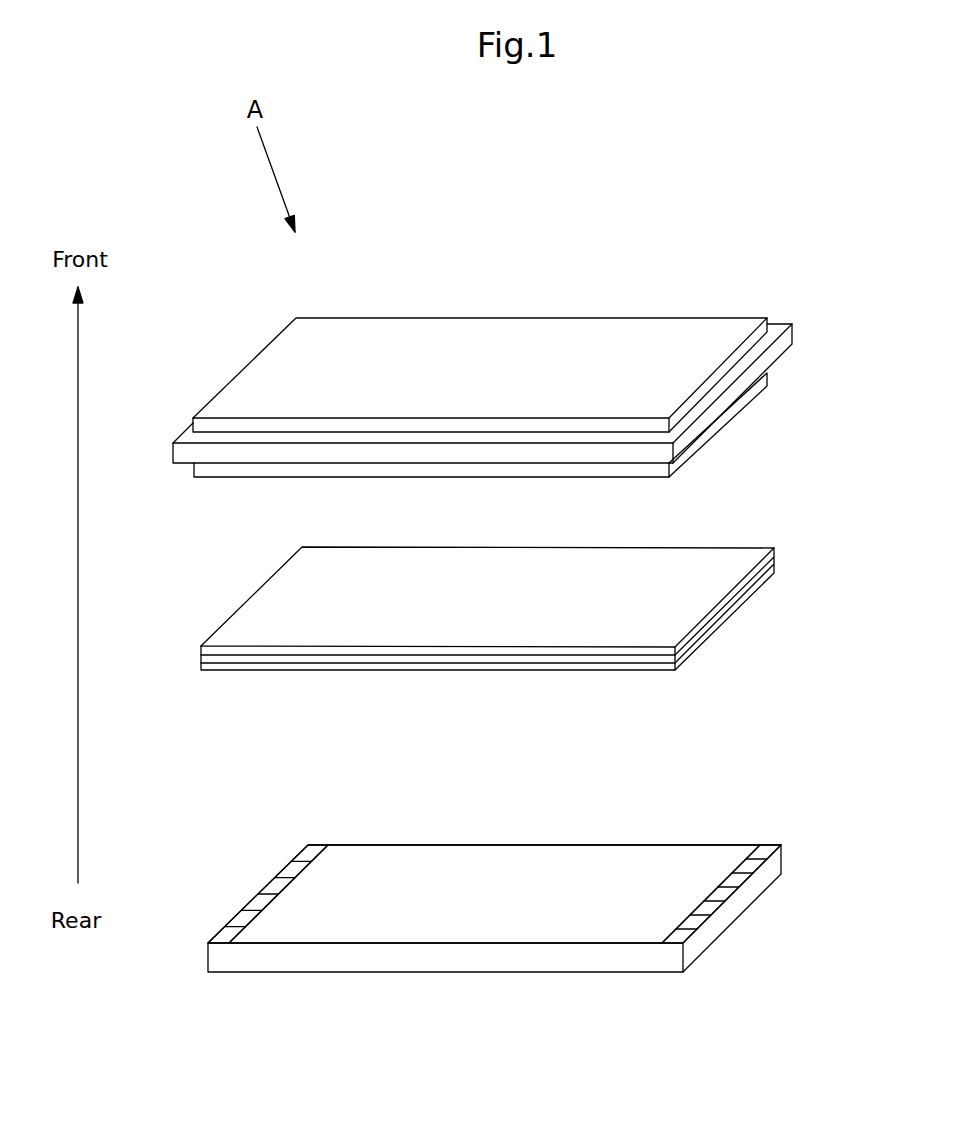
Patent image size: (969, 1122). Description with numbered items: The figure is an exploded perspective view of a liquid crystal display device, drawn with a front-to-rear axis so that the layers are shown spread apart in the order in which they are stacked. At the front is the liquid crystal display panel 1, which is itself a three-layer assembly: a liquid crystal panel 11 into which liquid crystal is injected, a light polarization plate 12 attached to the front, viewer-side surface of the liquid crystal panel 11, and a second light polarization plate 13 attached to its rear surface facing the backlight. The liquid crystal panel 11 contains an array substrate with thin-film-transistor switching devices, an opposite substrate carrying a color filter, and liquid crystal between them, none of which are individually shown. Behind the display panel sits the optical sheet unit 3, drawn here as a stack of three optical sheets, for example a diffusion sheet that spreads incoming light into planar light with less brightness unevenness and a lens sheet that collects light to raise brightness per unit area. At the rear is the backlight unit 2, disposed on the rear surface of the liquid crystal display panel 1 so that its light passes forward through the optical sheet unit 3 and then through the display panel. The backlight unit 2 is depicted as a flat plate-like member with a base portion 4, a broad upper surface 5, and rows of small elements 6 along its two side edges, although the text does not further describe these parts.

The liquid crystal display panel 1 is at (547, 377).
The liquid crystal panel 11 is at (775, 351).
The light polarization plate 12 is at (747, 334).
The light polarization plate 13 is at (737, 408).
The backlight unit 2 is at (494, 902).
The optical sheet unit 3 is at (784, 535).
The substrate 4 is at (534, 962).
The display surface 5 is at (470, 855).
The electrodes 6 is at (303, 853).